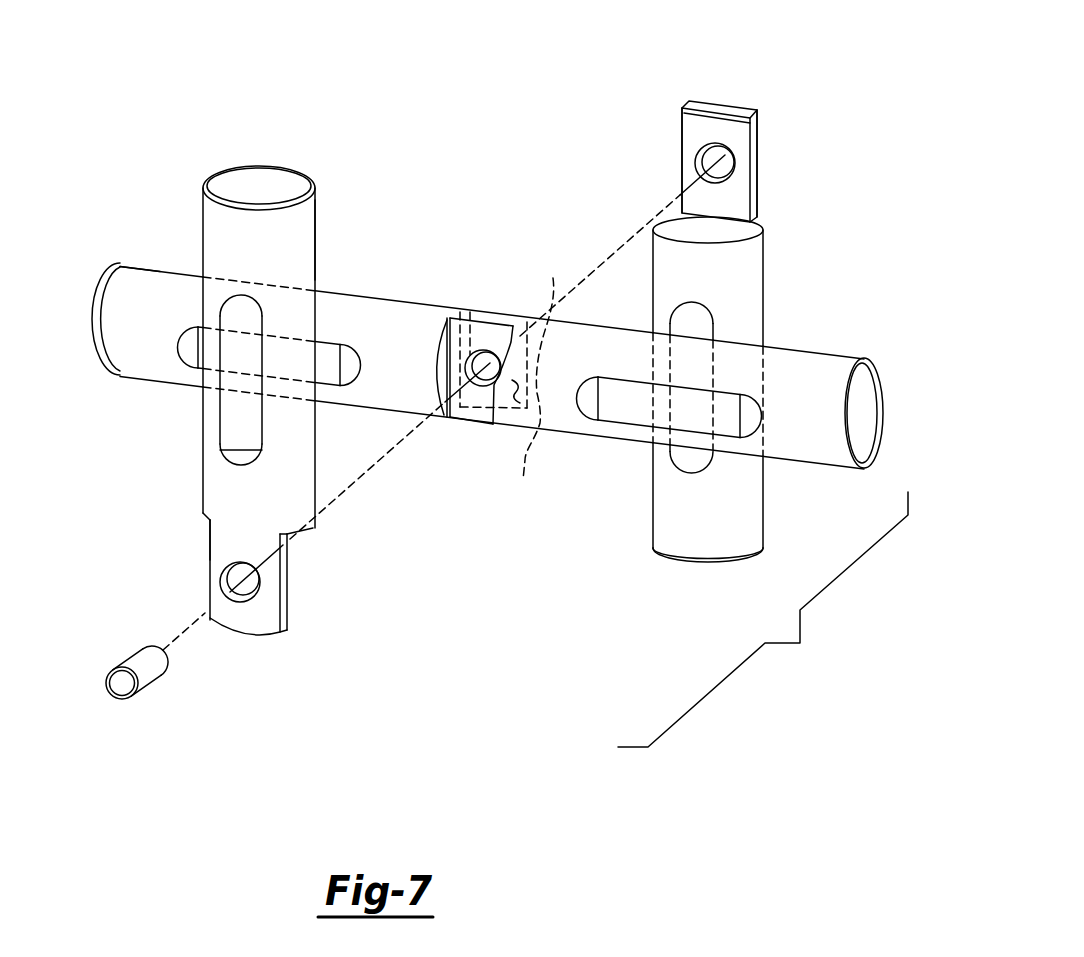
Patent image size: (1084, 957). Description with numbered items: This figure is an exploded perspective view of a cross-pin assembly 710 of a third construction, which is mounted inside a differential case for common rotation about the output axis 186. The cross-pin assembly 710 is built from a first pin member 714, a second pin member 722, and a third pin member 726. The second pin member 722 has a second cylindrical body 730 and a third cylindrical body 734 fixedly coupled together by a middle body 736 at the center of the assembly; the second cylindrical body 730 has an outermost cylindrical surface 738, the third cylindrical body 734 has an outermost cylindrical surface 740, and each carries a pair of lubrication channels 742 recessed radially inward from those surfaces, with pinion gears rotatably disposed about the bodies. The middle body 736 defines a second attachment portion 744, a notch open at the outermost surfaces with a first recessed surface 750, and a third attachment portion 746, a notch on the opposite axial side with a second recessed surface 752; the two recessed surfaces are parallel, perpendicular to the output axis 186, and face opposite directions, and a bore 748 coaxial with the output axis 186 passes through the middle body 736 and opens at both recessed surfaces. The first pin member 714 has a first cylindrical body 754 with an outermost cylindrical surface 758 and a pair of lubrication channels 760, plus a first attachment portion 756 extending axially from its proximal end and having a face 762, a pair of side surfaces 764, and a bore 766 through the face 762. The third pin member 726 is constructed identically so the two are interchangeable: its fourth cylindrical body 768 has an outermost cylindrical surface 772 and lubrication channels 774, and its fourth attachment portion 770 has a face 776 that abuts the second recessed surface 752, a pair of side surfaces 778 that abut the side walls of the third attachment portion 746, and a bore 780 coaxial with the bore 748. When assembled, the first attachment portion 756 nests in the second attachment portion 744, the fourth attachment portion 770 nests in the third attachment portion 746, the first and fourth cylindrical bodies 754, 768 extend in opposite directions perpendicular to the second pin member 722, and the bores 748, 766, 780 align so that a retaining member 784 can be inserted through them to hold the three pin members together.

The output axis 186 is at (625, 243).
The cross-pin assembly 710 is at (763, 619).
The first pin member 714 is at (309, 183).
The second pin member 722 is at (147, 265).
The third pin member 726 is at (653, 524).
The second cylindrical body 730 is at (128, 378).
The third cylindrical body 734 is at (850, 345).
The middle body 736 is at (490, 316).
The outermost cylindrical surface 738 is at (152, 308).
The outermost cylindrical surface 740 is at (820, 433).
The lubrication channels 742 is at (327, 353).
The second attachment portion 744 is at (442, 360).
The third attachment portion 746 is at (553, 300).
The bore 748 is at (490, 392).
The first recessed surface 750 is at (470, 412).
The second recessed surface 752 is at (540, 423).
The first cylindrical body 754 is at (203, 210).
The first attachment portion 756 is at (232, 622).
The outermost cylindrical surface 758 is at (272, 245).
The lubrication channels 760 is at (237, 434).
The face 762 is at (287, 575).
The side surfaces 764 is at (208, 543).
The bore 766 is at (243, 590).
The fourth cylindrical body 768 is at (738, 546).
The fourth attachment portion 770 is at (728, 105).
The outermost cylindrical surface 772 is at (708, 527).
The lubrication channels 774 is at (693, 325).
The face 776 is at (697, 118).
The side surfaces 778 is at (682, 125).
The bore 780 is at (718, 177).
The retaining member 784 is at (122, 690).